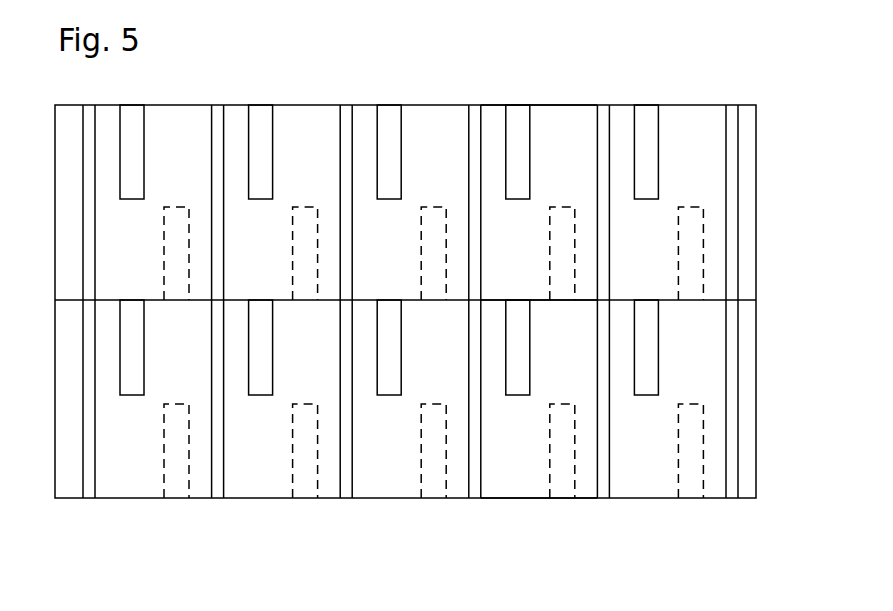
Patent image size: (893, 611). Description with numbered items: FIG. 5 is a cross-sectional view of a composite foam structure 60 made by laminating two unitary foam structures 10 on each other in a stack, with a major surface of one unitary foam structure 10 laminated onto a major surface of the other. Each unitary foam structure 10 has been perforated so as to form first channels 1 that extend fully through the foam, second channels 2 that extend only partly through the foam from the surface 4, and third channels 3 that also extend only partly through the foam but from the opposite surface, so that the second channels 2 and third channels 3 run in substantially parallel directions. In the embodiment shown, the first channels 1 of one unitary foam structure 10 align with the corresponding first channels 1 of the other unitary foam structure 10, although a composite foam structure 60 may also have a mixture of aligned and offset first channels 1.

The first channel 1 is at (218, 180).
The second channel 2 is at (388, 185).
The third channel 3 is at (695, 250).
The surface 4 is at (363, 105).
The unitary foam structure 10 is at (545, 105).
The composite foam structure 60 is at (424, 294).